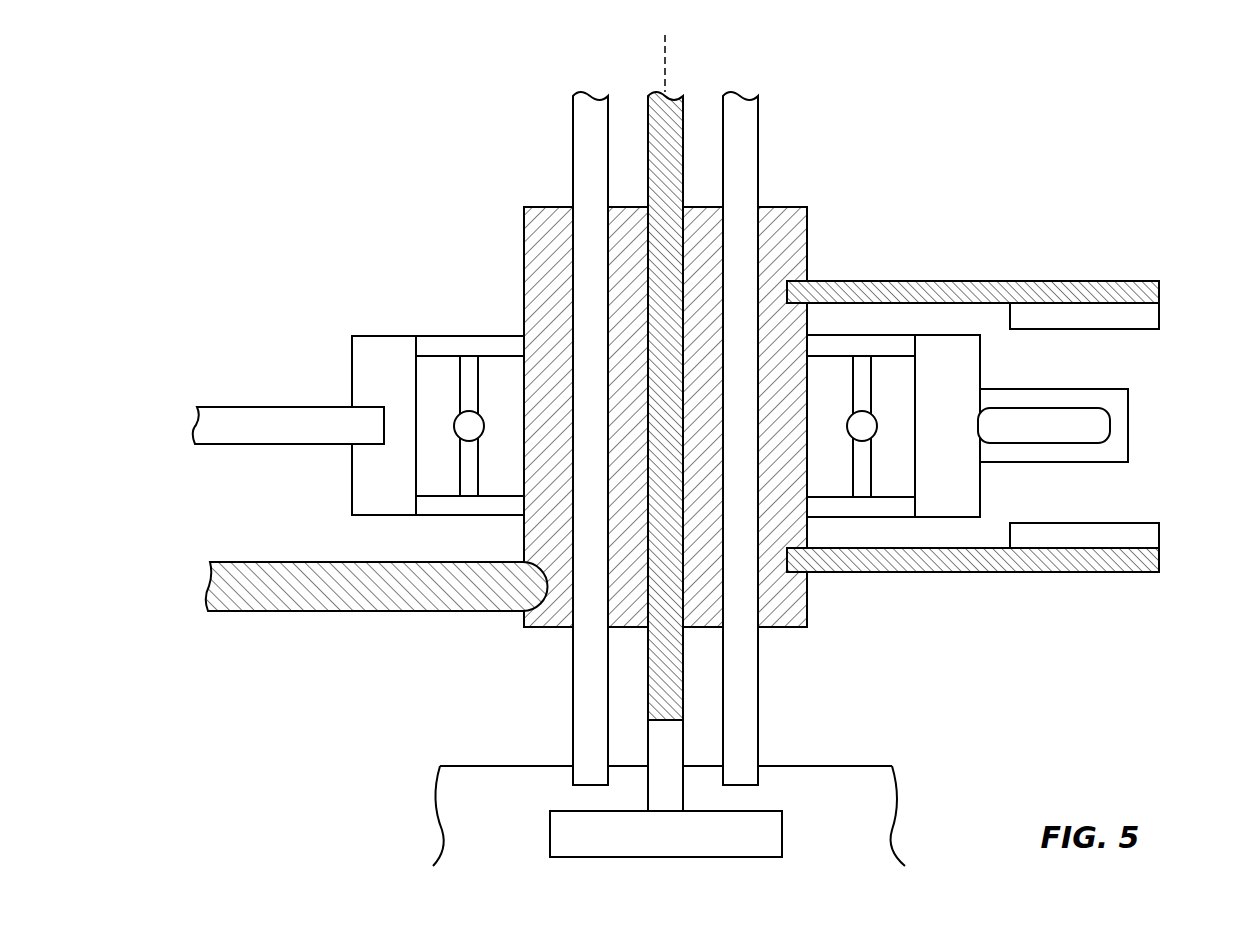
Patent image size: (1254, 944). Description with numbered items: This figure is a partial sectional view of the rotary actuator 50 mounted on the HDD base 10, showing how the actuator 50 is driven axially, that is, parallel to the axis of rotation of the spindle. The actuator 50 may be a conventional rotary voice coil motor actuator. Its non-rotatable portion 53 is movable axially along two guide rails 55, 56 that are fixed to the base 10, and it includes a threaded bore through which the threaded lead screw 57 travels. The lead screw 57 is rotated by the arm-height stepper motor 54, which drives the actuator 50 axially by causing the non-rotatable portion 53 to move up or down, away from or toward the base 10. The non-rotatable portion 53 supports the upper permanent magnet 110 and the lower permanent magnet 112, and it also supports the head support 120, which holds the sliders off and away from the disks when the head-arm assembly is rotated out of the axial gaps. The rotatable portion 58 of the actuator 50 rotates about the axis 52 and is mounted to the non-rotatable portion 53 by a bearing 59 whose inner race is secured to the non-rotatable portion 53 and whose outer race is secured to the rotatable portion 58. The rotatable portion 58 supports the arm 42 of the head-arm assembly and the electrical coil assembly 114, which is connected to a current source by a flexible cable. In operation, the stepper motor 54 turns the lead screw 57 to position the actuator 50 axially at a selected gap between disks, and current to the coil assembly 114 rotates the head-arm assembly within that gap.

The base 10 is at (485, 766).
The arm 42 is at (284, 407).
The actuator 50 is at (715, 447).
The axis 52 is at (668, 58).
The non-rotatable portion 53 is at (543, 207).
The arm-height stepper motor 54 is at (560, 840).
The guide rail 55 is at (582, 127).
The guide rail 56 is at (752, 127).
The threaded lead screw 57 is at (658, 96).
The rotatable portion 58 is at (372, 516).
The bearing 59 is at (470, 489).
The upper permanent magnet 110 is at (1152, 318).
The lower permanent magnet 112 is at (1152, 536).
The electrical coil assembly 114 is at (1118, 400).
The head support 120 is at (358, 612).